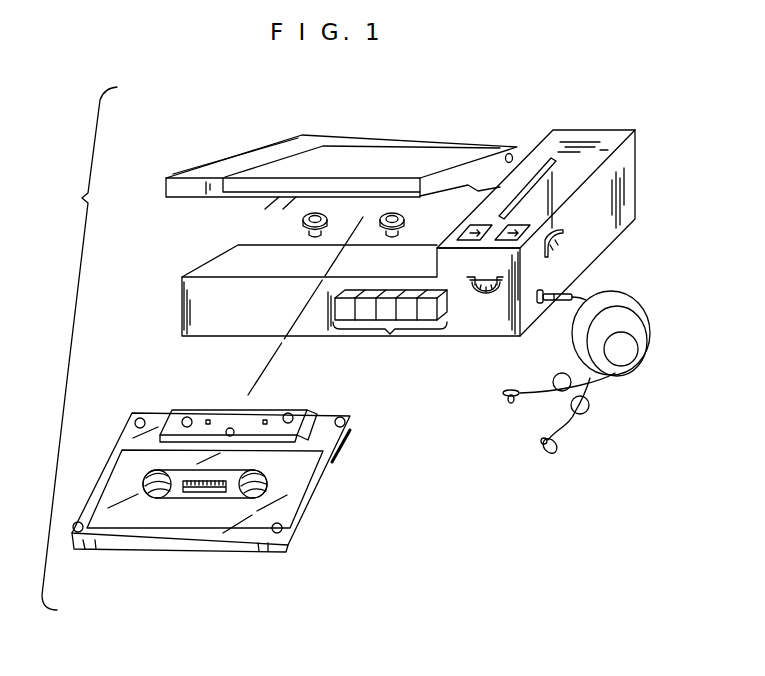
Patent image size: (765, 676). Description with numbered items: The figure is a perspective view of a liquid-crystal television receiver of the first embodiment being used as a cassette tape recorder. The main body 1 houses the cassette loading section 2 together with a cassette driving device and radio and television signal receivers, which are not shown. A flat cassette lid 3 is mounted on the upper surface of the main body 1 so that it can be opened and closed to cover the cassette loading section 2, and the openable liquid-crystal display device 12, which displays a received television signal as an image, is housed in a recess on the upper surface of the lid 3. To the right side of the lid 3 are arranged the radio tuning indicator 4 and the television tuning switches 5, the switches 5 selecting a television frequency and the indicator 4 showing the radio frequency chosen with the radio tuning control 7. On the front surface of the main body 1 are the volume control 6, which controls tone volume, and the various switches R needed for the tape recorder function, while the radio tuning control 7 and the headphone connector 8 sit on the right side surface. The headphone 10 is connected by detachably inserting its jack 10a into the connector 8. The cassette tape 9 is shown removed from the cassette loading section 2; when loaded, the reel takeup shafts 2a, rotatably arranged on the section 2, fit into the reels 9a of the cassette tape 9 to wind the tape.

The main body 1 is at (592, 125).
The cassette loading section 2 is at (285, 224).
The reel takeup shafts 2a is at (309, 236).
The cassette lid 3 is at (174, 187).
The radio tuning indicator 4 is at (549, 160).
The television tuning switches 5 is at (494, 222).
The volume control 6 is at (483, 295).
The radio tuning control 7 is at (563, 253).
The headphone connector 8 is at (540, 303).
The cassette tape 9 is at (120, 550).
The reels 9a is at (243, 498).
The headphone 10 is at (630, 364).
The jack 10a is at (572, 295).
The liquid-crystal display device 12 is at (387, 162).
The switches R is at (390, 334).